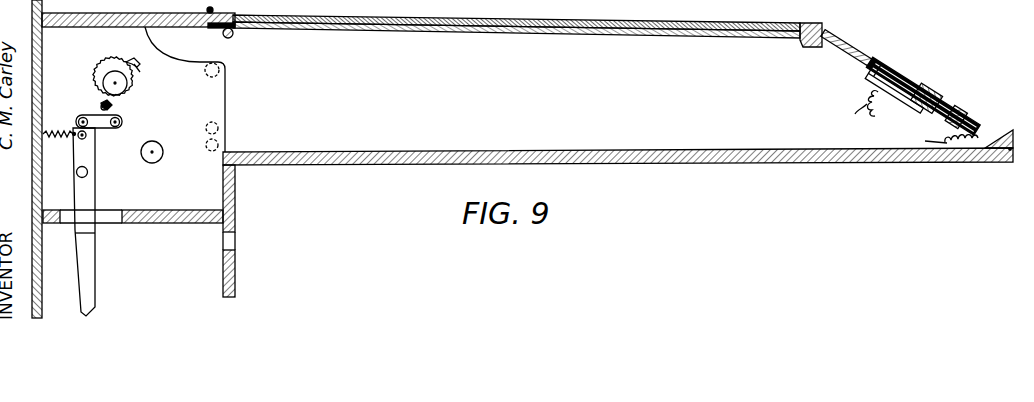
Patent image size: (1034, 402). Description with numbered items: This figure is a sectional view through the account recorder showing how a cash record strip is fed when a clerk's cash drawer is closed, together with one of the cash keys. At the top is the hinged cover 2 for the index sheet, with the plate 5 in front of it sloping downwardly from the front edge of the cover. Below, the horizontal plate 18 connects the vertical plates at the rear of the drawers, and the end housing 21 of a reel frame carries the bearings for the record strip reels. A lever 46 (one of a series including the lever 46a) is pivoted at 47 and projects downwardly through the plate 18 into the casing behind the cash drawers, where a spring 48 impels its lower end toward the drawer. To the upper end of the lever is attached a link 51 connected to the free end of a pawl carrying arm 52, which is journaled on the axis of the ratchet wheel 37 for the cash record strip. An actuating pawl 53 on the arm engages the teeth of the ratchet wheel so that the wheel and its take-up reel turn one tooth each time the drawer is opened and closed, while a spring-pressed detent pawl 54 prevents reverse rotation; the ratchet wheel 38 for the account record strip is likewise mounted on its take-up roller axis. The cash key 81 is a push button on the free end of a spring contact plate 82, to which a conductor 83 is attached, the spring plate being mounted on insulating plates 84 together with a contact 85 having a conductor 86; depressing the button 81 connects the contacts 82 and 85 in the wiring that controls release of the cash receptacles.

The hinged cover 2 is at (785, 22).
The plate 5 is at (863, 60).
The horizontal plate 18 is at (165, 222).
The end housing 21 is at (185, 89).
The ratchet wheel 37 is at (135, 96).
The ratchet wheel 38 is at (128, 82).
The lever 46 is at (86, 263).
The lever 46a is at (97, 195).
The pivot 47 is at (88, 170).
The spring 48 is at (64, 146).
The link 51 is at (96, 117).
The pawl carrying arm 52 is at (118, 117).
The actuating pawl 53 is at (102, 105).
The detent pawl 54 is at (133, 59).
The cash key 81 is at (935, 100).
The spring contact plate 82 is at (960, 118).
The conductor 83 is at (950, 145).
The insulating plate 84 is at (978, 127).
The contact 85 is at (905, 117).
The conductor 86 is at (866, 103).